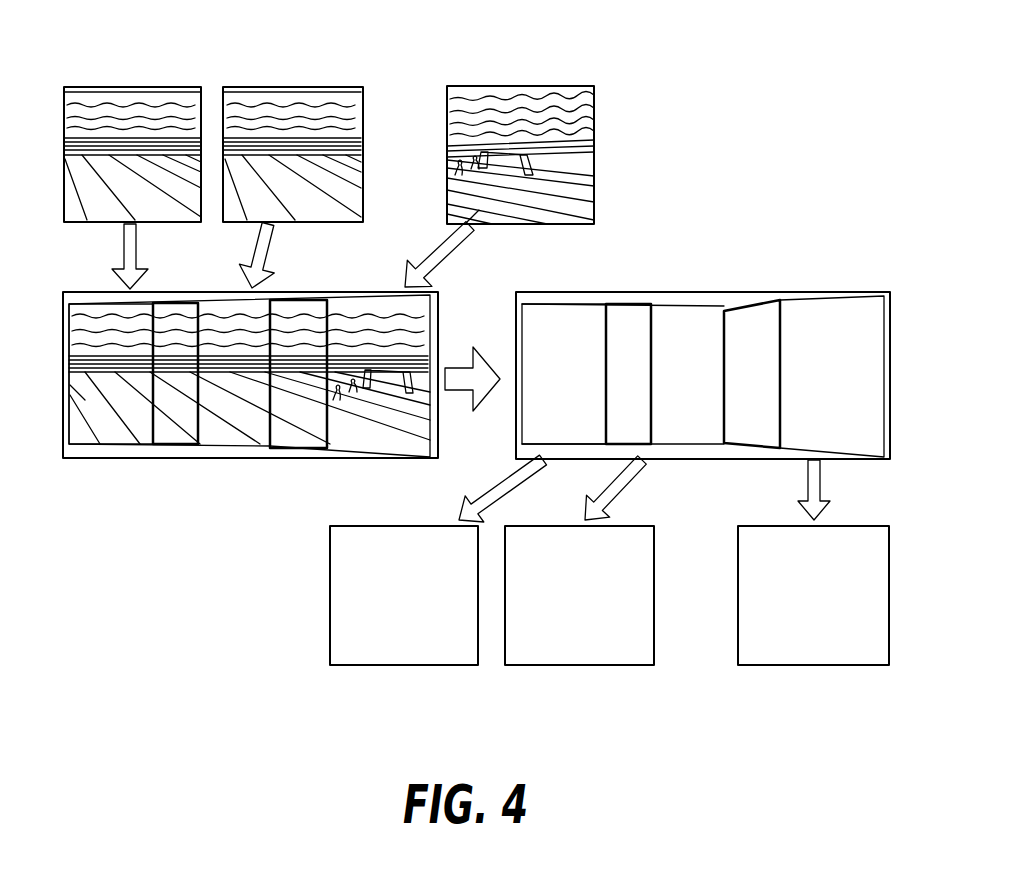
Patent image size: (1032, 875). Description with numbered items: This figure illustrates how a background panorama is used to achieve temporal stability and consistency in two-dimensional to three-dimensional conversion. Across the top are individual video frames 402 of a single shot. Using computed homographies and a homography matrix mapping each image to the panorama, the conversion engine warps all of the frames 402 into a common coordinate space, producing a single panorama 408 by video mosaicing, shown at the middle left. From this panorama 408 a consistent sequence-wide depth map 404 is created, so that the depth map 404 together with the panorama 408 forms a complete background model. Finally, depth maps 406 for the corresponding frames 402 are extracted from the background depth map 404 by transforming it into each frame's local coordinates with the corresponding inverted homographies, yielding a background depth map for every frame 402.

The frames 402 is at (467, 86).
The depth map 404 is at (838, 326).
The depth maps 406 is at (774, 665).
The panorama 408 is at (250, 397).